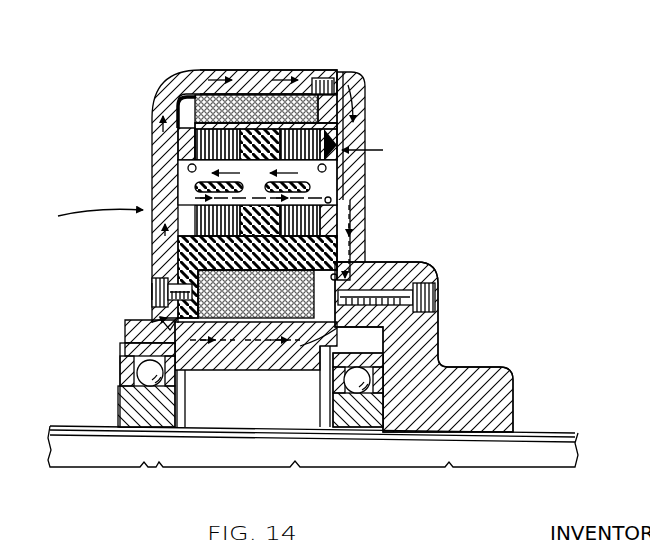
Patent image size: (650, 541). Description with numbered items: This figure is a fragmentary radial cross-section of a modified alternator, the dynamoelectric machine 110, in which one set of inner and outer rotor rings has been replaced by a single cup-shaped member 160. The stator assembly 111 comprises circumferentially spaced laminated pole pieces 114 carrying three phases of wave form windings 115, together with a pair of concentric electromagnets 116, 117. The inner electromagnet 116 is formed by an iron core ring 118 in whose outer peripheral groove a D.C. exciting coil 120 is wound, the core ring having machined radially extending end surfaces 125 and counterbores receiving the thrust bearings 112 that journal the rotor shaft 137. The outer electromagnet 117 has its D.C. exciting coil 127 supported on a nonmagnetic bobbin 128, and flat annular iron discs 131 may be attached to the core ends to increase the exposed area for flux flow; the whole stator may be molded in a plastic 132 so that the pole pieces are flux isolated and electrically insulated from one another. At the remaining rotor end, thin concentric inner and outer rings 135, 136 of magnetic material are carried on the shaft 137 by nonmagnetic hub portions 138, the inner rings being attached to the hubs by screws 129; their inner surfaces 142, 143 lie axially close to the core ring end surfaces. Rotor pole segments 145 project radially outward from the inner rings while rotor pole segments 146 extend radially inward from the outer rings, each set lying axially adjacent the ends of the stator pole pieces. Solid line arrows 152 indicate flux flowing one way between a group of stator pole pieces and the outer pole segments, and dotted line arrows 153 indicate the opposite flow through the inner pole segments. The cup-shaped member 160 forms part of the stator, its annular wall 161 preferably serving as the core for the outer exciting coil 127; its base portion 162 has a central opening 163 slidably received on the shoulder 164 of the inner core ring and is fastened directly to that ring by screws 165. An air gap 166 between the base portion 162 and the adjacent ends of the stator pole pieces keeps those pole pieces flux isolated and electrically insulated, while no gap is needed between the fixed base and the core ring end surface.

The dynamoelectric machine 110 is at (94, 205).
The stator assembly 111 is at (370, 144).
The thrust bearings 112 is at (319, 403).
The laminated pole pieces 114 is at (332, 196).
The wave form windings 115 is at (200, 143).
The inner electromagnet 116 is at (196, 374).
The outer electromagnet 117 is at (243, 66).
The iron core ring 118 is at (262, 346).
The D.C. exciting coil 120 is at (300, 346).
The end surfaces 125 is at (176, 266).
The D.C. exciting coil 127 is at (257, 95).
The bobbin 128 is at (181, 106).
The screws 129 is at (438, 346).
The annular iron discs 131 is at (348, 106).
The plastic 132 is at (339, 262).
The inner rings 135 is at (352, 282).
The outer rings 136 is at (358, 128).
The rotor shaft 137 is at (187, 452).
The hub portions 138 is at (488, 373).
The inner surfaces 142 is at (400, 285).
The inner surfaces 143 is at (341, 75).
The rotor pole segments 145 is at (343, 206).
The rotor pole segments 146 is at (356, 176).
The solid line arrows 152 is at (184, 95).
The dotted line arrows 153 is at (150, 296).
The cup-shaped member 160 is at (166, 165).
The annular wall 161 is at (293, 78).
The base portion 162 is at (157, 233).
The central opening 163 is at (128, 328).
The shoulder 164 is at (152, 320).
The screws 165 is at (152, 286).
The air gap 166 is at (181, 195).